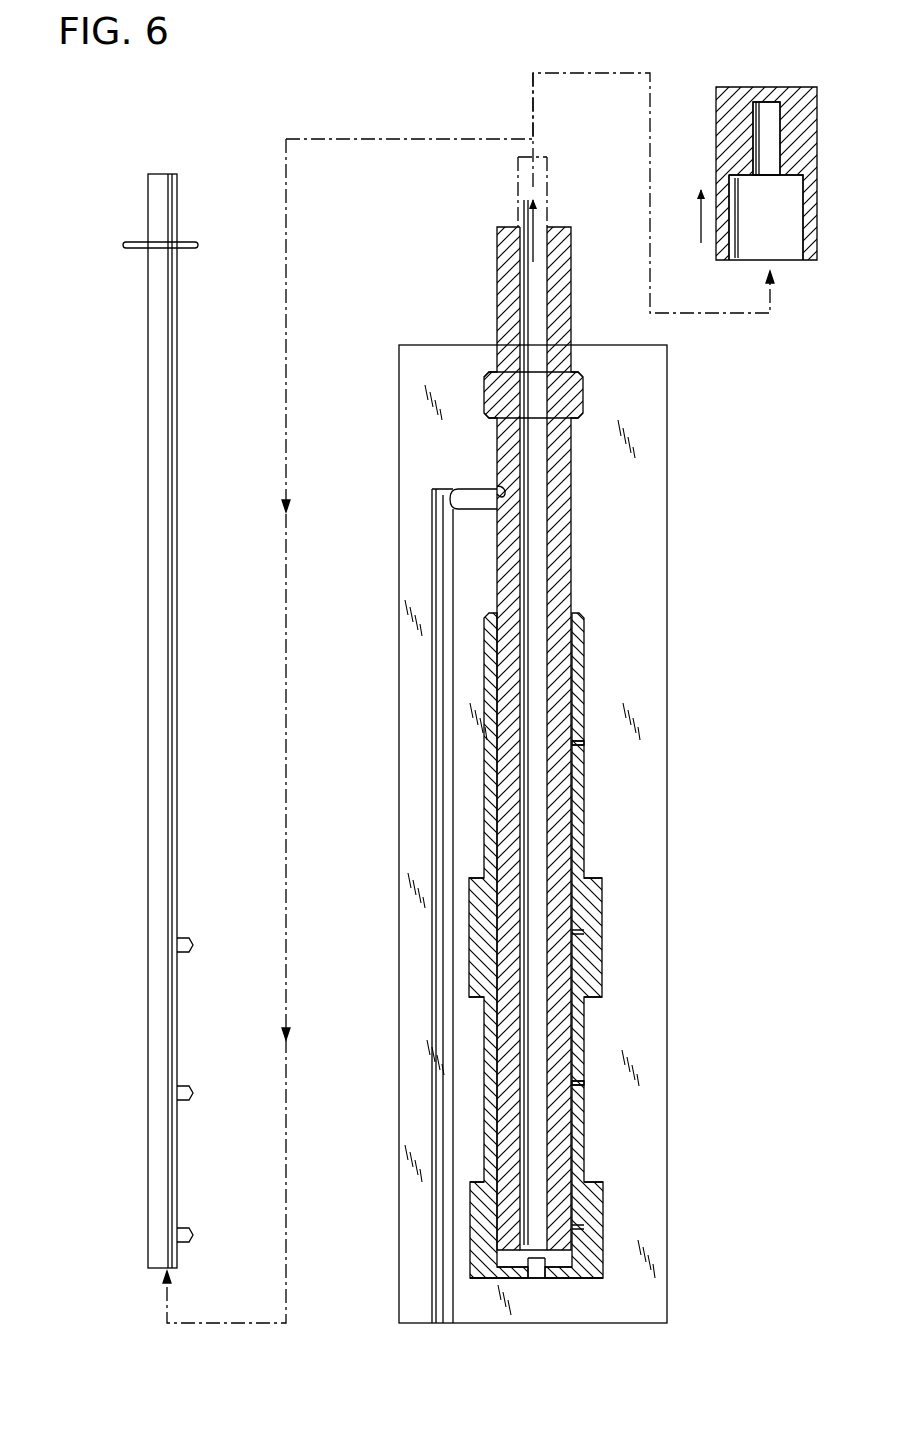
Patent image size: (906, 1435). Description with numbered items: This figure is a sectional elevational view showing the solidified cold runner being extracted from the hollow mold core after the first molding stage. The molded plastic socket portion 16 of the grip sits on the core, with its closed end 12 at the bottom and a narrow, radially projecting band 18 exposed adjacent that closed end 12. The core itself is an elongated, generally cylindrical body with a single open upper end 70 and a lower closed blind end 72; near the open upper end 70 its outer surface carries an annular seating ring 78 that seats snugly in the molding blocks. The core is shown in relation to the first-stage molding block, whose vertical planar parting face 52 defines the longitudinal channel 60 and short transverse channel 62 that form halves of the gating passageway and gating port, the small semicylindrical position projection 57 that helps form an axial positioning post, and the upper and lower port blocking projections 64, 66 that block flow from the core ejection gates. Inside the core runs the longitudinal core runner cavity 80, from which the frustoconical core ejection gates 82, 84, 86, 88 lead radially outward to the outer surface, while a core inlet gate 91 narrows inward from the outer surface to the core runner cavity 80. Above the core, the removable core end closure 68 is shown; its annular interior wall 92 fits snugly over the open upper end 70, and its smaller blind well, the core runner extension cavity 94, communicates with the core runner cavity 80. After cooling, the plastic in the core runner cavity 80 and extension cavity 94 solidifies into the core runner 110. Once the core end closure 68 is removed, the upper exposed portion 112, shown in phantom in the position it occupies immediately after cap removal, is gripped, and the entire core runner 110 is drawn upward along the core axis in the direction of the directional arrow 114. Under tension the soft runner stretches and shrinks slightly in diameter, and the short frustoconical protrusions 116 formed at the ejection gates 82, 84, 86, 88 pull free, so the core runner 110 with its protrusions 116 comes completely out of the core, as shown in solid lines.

The closed end 12 is at (578, 1280).
The socket portion 16 is at (484, 1097).
The narrow band 18 is at (602, 1224).
The parting face 52 is at (635, 569).
The position projection 57 is at (536, 1270).
The longitudinal channel 60 is at (448, 949).
The transverse channel 62 is at (470, 496).
The port blocking projection 64 is at (583, 744).
The port blocking projection 66 is at (583, 1083).
The core end closure 68 is at (712, 127).
The open upper end 70 is at (572, 292).
The closed blind end 72 is at (577, 1252).
The seating ring 78 is at (600, 389).
The core runner cavity 80 is at (535, 513).
The core ejection gate 82 is at (574, 742).
The core ejection gate 84 is at (575, 932).
The core ejection gate 86 is at (574, 1083).
The core ejection gate 88 is at (574, 1228).
The core inlet gate 91 is at (505, 490).
The annular interior wall 92 is at (793, 242).
The core runner extension cavity 94 is at (770, 112).
The core runner 110 is at (146, 628).
The exposed portion 112 is at (547, 182).
The directional arrow 114 is at (540, 214).
The protrusion 116 is at (189, 1093).